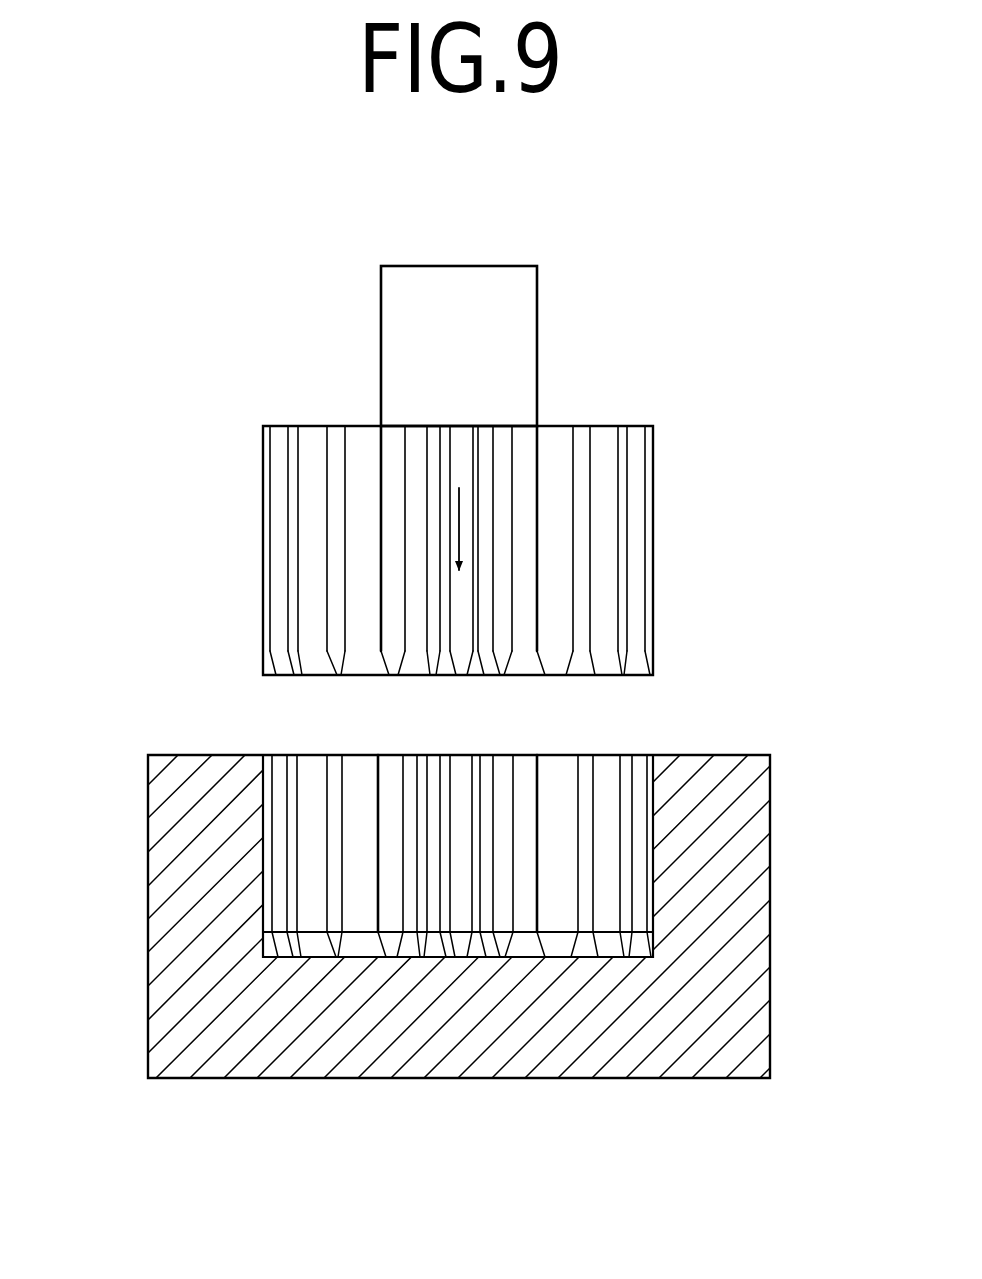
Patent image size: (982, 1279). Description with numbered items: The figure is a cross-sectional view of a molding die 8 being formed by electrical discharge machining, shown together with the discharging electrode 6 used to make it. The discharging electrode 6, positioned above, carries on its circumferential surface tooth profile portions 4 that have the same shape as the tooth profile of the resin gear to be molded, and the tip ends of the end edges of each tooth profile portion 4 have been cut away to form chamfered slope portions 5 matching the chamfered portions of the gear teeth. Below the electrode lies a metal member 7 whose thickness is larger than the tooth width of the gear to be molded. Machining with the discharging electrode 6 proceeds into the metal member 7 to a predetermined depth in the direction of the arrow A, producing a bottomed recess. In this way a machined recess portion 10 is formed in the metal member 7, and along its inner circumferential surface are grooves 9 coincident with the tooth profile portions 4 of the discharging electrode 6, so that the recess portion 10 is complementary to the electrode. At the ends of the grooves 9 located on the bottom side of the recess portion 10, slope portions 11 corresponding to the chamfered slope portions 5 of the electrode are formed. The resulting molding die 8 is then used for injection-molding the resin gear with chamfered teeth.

The tooth profile portion 4 is at (460, 622).
The chamfered slope portion 5 is at (468, 667).
The discharging electrode 6 is at (606, 385).
The metal member 7 is at (147, 903).
The molding die 8 is at (128, 729).
The groove 9 is at (460, 803).
The machined recess portion 10 is at (363, 780).
The slope portion 11 is at (478, 950).
The arrow A is at (457, 540).